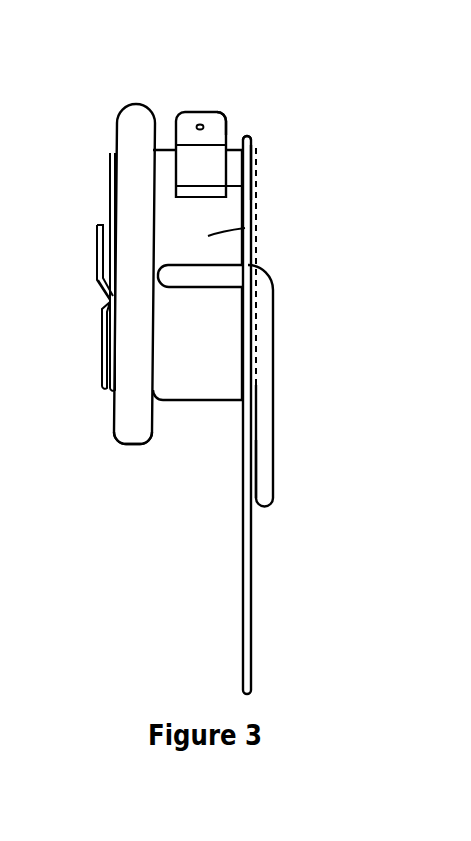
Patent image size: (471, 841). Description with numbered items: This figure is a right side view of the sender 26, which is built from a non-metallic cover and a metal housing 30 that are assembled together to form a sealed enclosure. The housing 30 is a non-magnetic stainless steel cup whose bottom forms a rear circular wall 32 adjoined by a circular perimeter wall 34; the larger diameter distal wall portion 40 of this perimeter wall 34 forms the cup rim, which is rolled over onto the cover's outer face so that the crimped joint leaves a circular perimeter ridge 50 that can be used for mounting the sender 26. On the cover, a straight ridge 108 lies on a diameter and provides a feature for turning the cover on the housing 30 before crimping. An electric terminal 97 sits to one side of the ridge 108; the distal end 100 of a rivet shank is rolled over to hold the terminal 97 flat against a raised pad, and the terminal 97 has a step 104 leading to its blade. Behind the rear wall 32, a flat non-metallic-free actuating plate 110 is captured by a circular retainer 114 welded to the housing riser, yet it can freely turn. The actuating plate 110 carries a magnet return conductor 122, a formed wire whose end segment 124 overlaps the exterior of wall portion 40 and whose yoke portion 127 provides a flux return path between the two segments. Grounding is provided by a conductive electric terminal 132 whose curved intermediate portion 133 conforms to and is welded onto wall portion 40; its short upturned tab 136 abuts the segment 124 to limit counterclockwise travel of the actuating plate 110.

The sender 26 is at (104, 106).
The circular perimeter ridge 50 is at (135, 128).
The straight ridge 108 is at (108, 155).
The electric terminal 97 is at (99, 226).
The step 104 is at (97, 287).
The distal end of the rivet shank 100 is at (101, 322).
The rear circular wall 32 is at (125, 443).
The larger diameter distal wall portion 40 is at (193, 373).
The end segment of magnet return conductor 124 is at (197, 272).
The conductive electric terminal 132 is at (200, 110).
The intermediate portion of the terminal 133 is at (230, 122).
The short upturned tab 136 is at (242, 187).
The circular perimeter wall 34 is at (245, 228).
The housing 30 is at (251, 136).
The actuating plate 110 is at (252, 145).
The circular retainer 114 is at (252, 158).
The magnet return conductor 122 is at (274, 408).
The yoke portion 127 is at (258, 455).